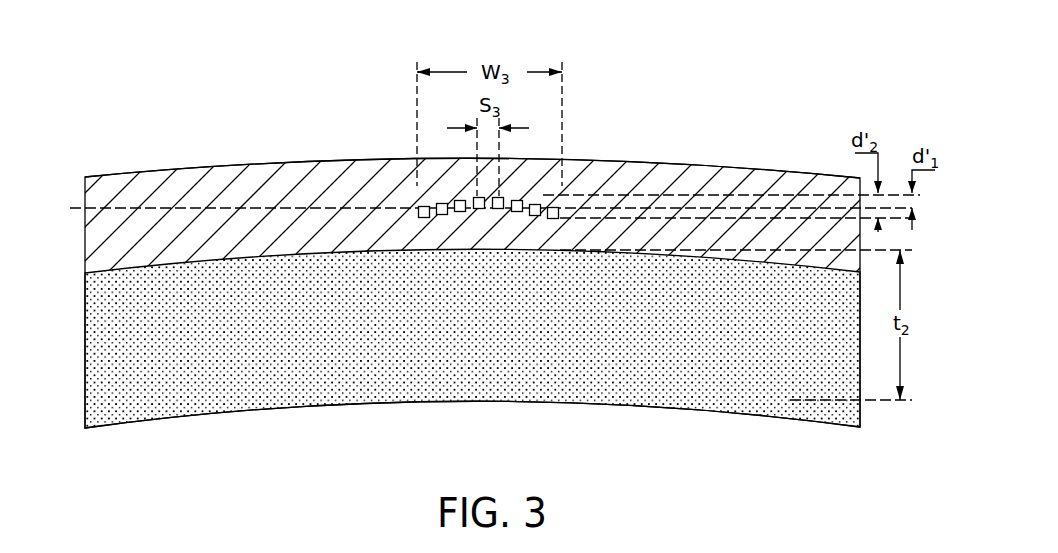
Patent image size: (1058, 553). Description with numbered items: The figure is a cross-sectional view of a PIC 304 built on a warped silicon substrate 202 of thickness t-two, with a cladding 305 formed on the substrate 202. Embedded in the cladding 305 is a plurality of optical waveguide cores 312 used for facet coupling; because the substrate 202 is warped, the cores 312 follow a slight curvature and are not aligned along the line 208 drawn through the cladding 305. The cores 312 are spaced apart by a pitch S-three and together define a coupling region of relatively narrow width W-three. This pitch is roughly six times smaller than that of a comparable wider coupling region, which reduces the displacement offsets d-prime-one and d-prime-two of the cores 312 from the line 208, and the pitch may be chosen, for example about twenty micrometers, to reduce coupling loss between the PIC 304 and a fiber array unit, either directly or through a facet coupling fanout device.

The PIC 304 is at (748, 69).
The cladding 305 is at (107, 175).
The line 208 is at (105, 208).
The warped silicon substrate 202 is at (85, 372).
The optical waveguide cores 312 is at (481, 208).